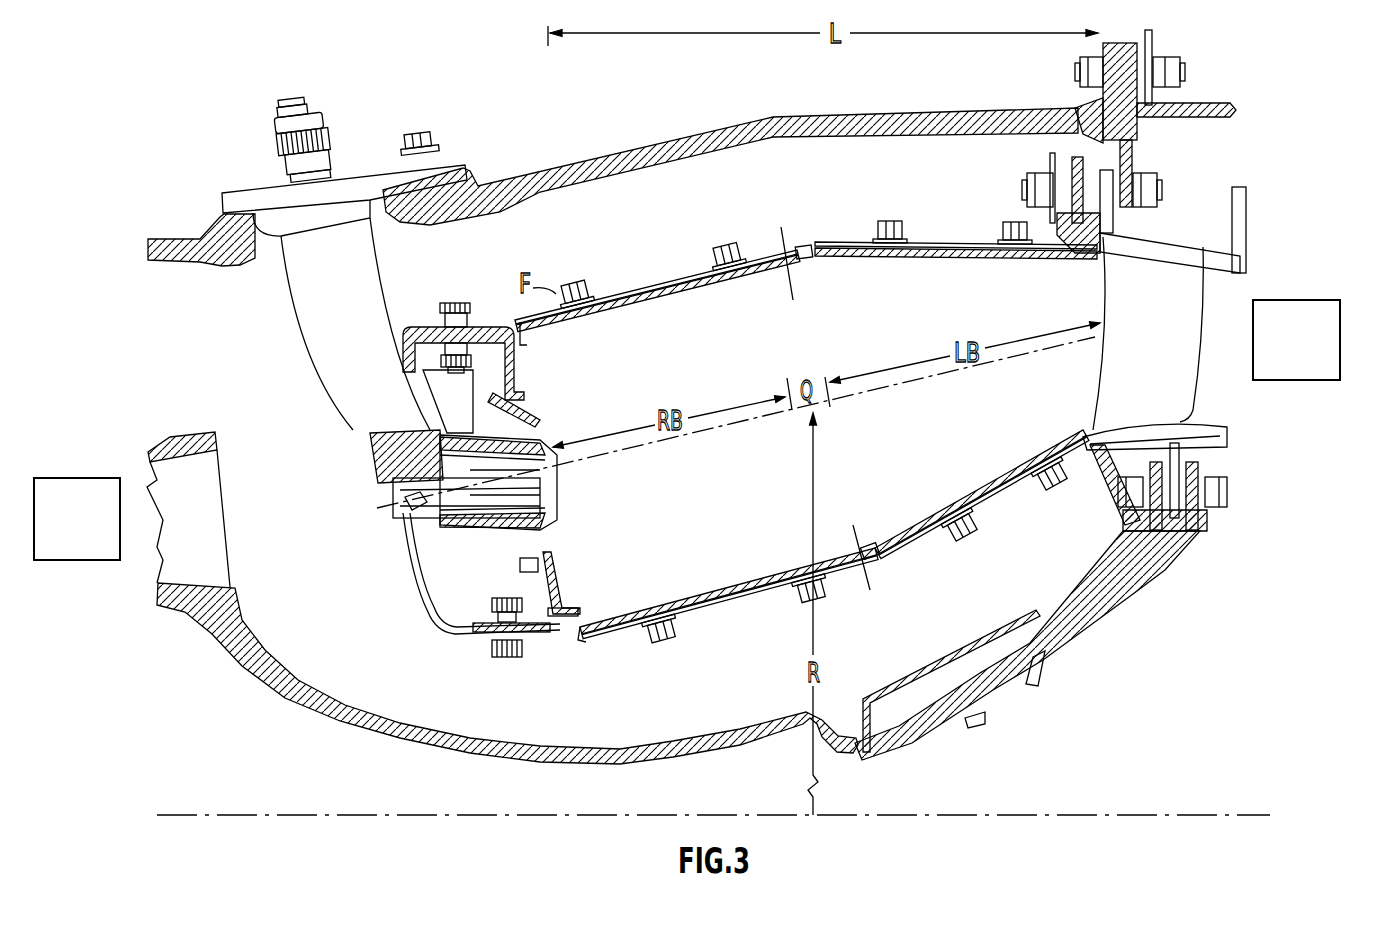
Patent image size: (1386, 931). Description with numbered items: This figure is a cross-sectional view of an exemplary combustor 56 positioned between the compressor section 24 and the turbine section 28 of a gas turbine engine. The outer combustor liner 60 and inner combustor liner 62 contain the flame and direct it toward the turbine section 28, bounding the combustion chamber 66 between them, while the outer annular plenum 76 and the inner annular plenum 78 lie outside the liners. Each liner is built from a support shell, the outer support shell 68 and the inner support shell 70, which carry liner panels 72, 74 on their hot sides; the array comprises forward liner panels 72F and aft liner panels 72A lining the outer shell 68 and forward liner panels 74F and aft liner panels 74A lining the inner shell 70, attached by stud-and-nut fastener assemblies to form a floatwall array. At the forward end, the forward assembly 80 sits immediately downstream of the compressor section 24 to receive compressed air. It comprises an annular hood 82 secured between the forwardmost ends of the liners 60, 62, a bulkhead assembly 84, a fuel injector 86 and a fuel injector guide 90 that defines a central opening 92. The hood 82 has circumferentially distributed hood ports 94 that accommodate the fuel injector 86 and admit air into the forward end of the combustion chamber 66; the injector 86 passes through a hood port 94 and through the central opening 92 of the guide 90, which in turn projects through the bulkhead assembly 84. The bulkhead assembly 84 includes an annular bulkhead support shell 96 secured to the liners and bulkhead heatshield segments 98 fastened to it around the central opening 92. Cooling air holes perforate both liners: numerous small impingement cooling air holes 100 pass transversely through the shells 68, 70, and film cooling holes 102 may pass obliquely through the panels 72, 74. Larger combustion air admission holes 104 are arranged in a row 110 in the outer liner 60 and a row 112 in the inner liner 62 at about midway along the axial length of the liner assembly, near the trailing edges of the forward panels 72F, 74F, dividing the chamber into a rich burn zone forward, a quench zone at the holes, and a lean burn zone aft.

The compressor section 24 is at (90, 531).
The turbine section 28 is at (1310, 354).
The combustor 56 is at (1283, 92).
The outer combustor liner 60 is at (887, 197).
The inner combustor liner 62 is at (930, 583).
The combustion chamber 66 is at (711, 386).
The outer support shell 68 is at (700, 263).
The inner support shell 70 is at (757, 606).
The outer liner panels 72 is at (858, 285).
The forward outer liner panel 72F is at (625, 310).
The aft outer liner panel 72A is at (947, 252).
The inner liner panels 74 is at (892, 505).
The forward inner liner panel 74F is at (735, 582).
The aft inner liner panel 74A is at (973, 493).
The outer annular plenum 76 is at (668, 214).
The inner annular plenum 78 is at (723, 706).
The forward assembly 80 is at (388, 626).
The annular hood 82 is at (430, 615).
The bulkhead assembly 84 is at (565, 557).
The fuel injector 86 is at (578, 493).
The fuel injector guide 90 is at (480, 415).
The central opening 92 is at (548, 420).
The hood port 94 is at (418, 567).
The bulkhead support shell 96 is at (552, 617).
The bulkhead heatshield segment 98 is at (575, 592).
The impingement cooling air hole 100 is at (640, 283).
The film cooling hole 102 is at (717, 295).
The combustion air admission hole 104 is at (790, 285).
The row of combustion air admission holes in outer liner 110 is at (790, 233).
The row of combustion air admission holes in inner liner 112 is at (878, 600).